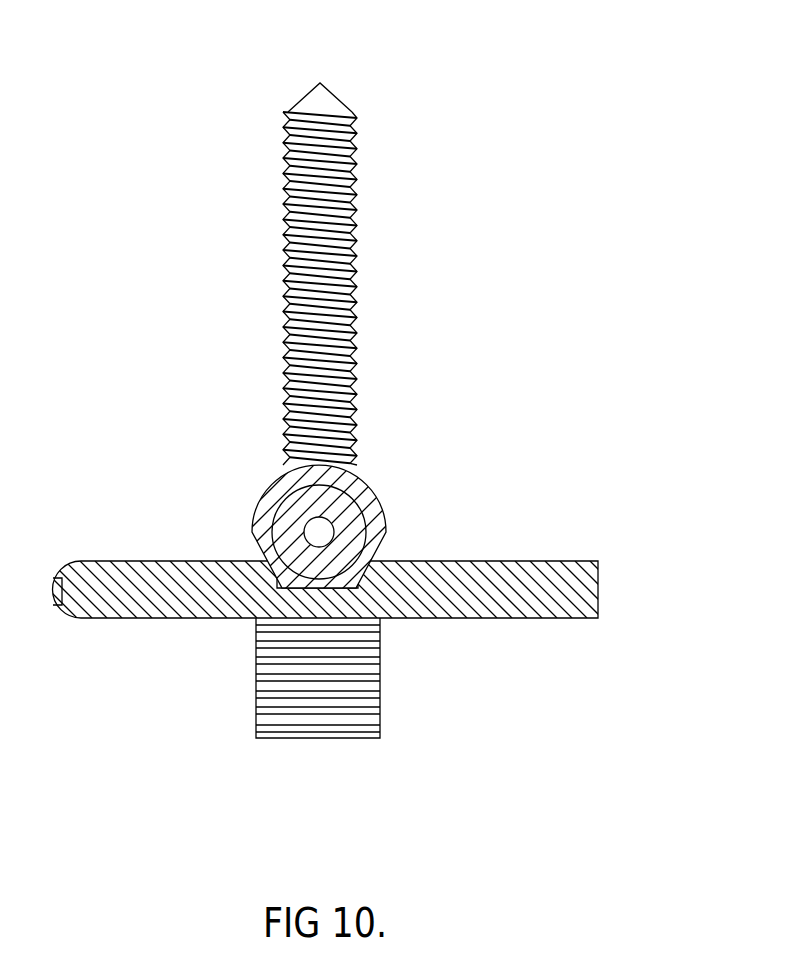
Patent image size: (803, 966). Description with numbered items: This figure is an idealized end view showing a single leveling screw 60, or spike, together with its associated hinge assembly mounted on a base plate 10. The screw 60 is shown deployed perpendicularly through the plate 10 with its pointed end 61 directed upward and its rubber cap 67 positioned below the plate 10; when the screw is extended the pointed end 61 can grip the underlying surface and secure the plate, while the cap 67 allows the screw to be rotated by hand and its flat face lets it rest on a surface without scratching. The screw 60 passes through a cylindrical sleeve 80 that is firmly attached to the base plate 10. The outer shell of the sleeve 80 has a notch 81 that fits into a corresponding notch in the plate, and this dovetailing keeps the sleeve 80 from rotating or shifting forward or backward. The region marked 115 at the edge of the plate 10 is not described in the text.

The base plate 10 is at (598, 593).
The plate end 115 is at (137, 620).
The notch 81 is at (258, 563).
The cylindrical sleeve 80 is at (275, 478).
The rubber cap 67 is at (380, 687).
The leveling screw 60 is at (358, 352).
The pointed end 61 is at (320, 83).